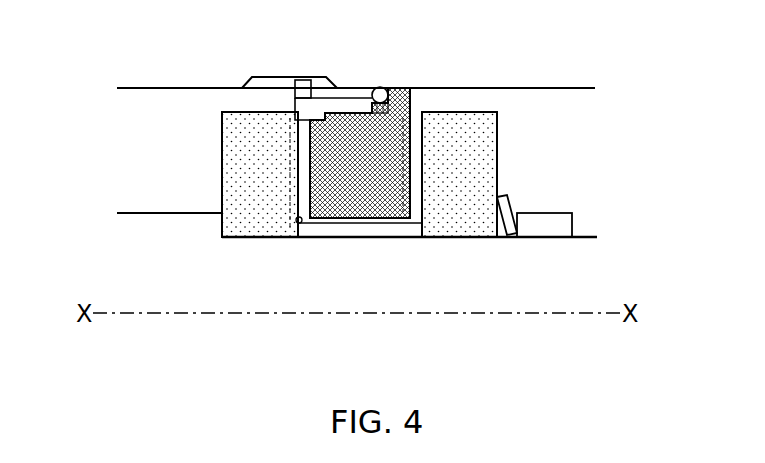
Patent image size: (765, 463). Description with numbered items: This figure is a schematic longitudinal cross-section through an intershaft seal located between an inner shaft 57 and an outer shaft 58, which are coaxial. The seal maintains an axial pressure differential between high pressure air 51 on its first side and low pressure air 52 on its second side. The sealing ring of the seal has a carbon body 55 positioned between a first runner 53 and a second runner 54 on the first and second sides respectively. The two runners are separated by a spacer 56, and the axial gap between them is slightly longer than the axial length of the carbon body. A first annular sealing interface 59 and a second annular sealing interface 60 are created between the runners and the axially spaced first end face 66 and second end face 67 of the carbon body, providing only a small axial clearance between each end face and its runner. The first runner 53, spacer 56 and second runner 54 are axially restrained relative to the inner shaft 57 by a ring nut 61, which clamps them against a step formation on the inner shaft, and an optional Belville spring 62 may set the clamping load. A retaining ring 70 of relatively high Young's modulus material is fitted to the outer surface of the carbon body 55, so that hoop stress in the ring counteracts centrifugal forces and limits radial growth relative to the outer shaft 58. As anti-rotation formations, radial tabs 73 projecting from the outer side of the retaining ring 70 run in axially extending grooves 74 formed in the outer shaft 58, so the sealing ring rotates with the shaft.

The high pressure air 51 is at (190, 169).
The low pressure air 52 is at (565, 149).
The first runner 53 is at (243, 127).
The second runner 54 is at (480, 120).
The carbon body 55 is at (367, 185).
The spacer 56 is at (345, 227).
The inner shaft 57 is at (598, 238).
The outer shaft 58 is at (588, 88).
The first annular sealing interface 59 is at (293, 127).
The second annular sealing interface 60 is at (413, 113).
The ring nut 61 is at (562, 214).
The Belville spring 62 is at (507, 196).
The first end face 66 is at (298, 223).
The second end face 67 is at (418, 172).
The retaining ring 70 is at (352, 92).
The radial tabs 73 is at (311, 80).
The axially extending grooves 74 is at (285, 76).